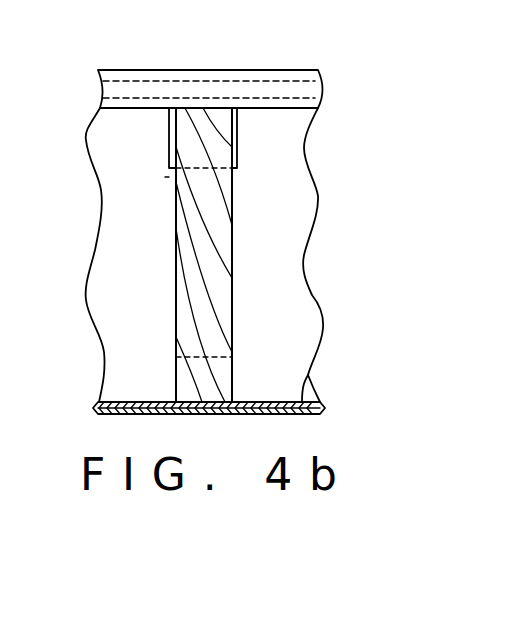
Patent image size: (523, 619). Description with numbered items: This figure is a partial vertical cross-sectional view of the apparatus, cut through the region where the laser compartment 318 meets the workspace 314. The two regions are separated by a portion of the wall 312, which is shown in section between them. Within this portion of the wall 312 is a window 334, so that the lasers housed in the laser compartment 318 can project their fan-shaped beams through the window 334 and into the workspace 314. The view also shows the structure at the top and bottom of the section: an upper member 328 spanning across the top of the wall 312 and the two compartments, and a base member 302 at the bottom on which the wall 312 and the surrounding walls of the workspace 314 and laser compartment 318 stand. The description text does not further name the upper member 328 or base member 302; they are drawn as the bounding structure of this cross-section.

The base plate 302 is at (310, 373).
The wall 312 is at (217, 148).
The workspace 314 is at (127, 212).
The laser compartment 318 is at (283, 264).
The top plate 328 is at (223, 82).
The window 334 is at (212, 170).